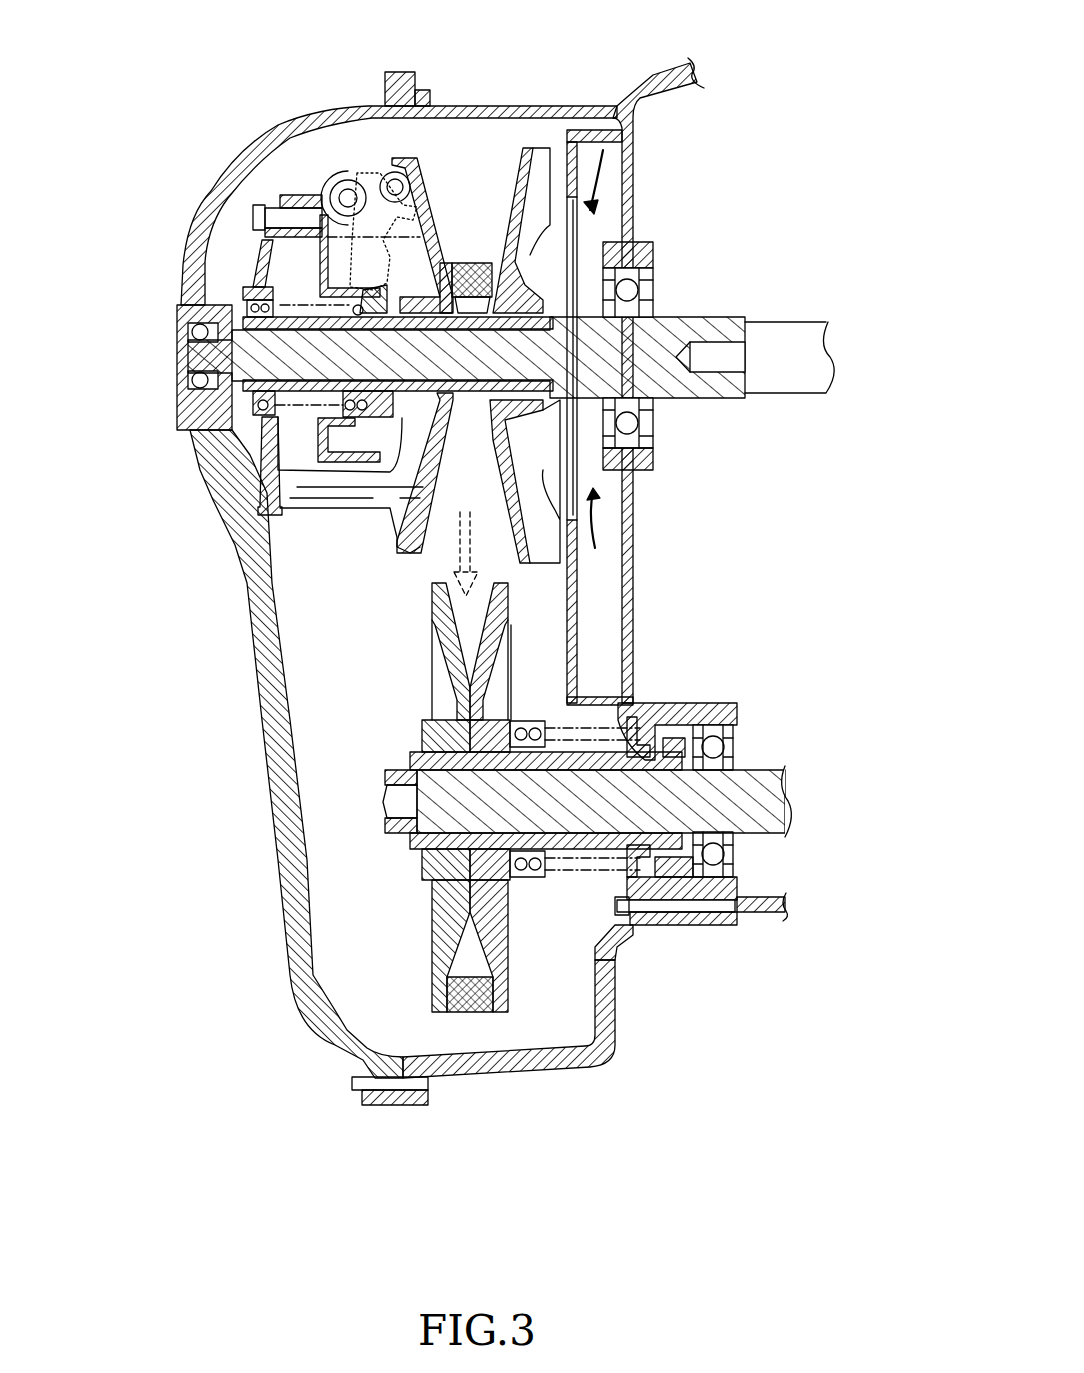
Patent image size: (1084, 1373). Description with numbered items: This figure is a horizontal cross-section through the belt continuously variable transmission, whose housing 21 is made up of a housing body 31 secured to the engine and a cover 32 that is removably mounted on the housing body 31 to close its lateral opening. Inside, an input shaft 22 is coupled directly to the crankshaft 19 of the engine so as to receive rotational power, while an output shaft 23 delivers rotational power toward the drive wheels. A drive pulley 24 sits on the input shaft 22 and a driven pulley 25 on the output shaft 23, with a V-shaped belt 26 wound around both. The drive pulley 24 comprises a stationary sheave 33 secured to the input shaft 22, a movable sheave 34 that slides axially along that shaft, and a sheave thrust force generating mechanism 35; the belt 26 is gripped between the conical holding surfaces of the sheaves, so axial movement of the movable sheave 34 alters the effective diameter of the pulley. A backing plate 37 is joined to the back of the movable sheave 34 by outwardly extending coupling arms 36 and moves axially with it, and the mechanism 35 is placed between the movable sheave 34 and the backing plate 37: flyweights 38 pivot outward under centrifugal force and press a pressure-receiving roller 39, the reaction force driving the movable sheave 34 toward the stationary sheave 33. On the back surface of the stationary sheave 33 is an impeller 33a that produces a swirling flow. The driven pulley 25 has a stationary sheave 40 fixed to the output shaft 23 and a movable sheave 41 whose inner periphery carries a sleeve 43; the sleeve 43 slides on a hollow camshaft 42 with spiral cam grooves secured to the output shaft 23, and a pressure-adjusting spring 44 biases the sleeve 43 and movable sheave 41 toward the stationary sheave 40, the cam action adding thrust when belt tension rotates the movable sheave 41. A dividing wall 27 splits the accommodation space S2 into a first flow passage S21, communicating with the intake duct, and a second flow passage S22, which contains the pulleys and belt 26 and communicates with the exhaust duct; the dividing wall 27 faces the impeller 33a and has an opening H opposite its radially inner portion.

The crankshaft 19 is at (780, 333).
The housing 21 is at (285, 1170).
The input shaft 22 is at (300, 317).
The output shaft 23 is at (767, 800).
The drive pulley 24 is at (378, 187).
The driven pulley 25 is at (427, 923).
The belt 26 is at (433, 572).
The dividing wall 27 is at (590, 128).
The housing body 31 is at (463, 1078).
The cover 32 is at (318, 1045).
The stationary sheave 33 is at (500, 140).
The impeller 33a is at (545, 135).
The movable sheave 34 is at (420, 148).
The sheave thrust force generating mechanism 35 is at (335, 168).
The coupling arms 36 is at (292, 195).
The backing plate 37 is at (262, 493).
The flyweights 38 is at (372, 265).
The pressure-receiving roller 39 is at (370, 215).
The stationary sheave 40 is at (432, 685).
The movable sheave 41 is at (508, 670).
The hollow camshaft 42 is at (660, 720).
The sleeve 43 is at (515, 721).
The pressure-adjusting spring 44 is at (600, 866).
The opening H is at (575, 243).
The accommodation space S2 is at (540, 1030).
The first flow passage S21 is at (597, 663).
The second flow passage S22 is at (310, 693).